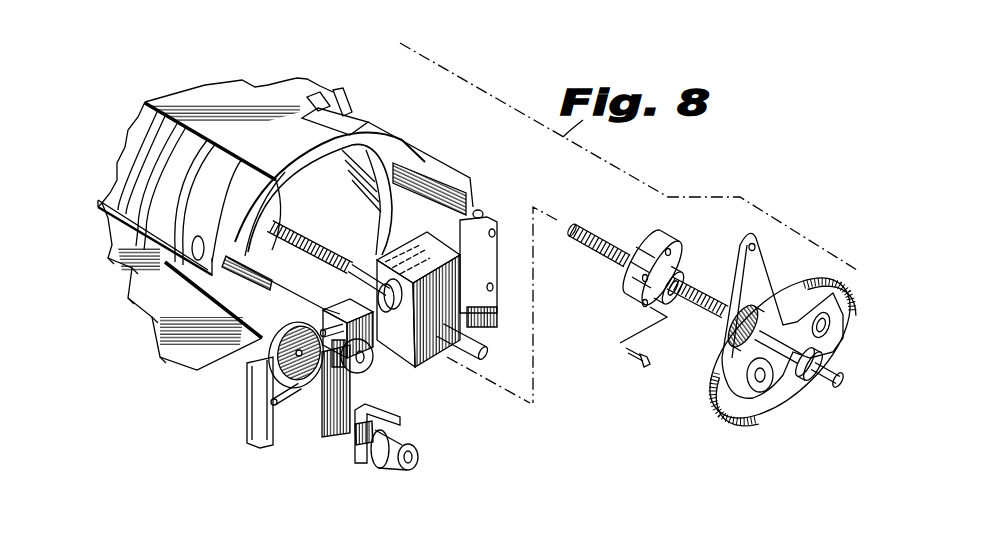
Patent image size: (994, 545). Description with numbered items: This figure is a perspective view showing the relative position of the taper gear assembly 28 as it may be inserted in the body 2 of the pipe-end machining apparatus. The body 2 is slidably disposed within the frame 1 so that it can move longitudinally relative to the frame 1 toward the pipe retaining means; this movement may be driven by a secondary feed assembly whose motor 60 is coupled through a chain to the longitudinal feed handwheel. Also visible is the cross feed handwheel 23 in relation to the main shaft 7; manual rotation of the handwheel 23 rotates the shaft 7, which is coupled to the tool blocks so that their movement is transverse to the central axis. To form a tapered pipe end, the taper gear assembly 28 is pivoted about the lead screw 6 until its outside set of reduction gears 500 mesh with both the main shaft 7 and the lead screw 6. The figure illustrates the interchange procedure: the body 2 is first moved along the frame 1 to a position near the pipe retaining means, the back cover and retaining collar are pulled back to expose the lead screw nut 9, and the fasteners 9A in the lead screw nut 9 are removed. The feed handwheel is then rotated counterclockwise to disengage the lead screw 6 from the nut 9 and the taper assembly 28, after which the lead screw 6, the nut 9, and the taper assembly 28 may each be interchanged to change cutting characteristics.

The frame 1 is at (490, 217).
The body 2 is at (380, 127).
The lead screw 6 is at (600, 250).
The main shaft 7 is at (480, 348).
The lead screw nut 9 is at (670, 244).
The fasteners 9A is at (645, 372).
The cross feed handwheel 23 is at (300, 390).
The taper gear assembly 28 is at (782, 402).
The motor 60 is at (407, 470).
The reduction gears 500 is at (850, 300).